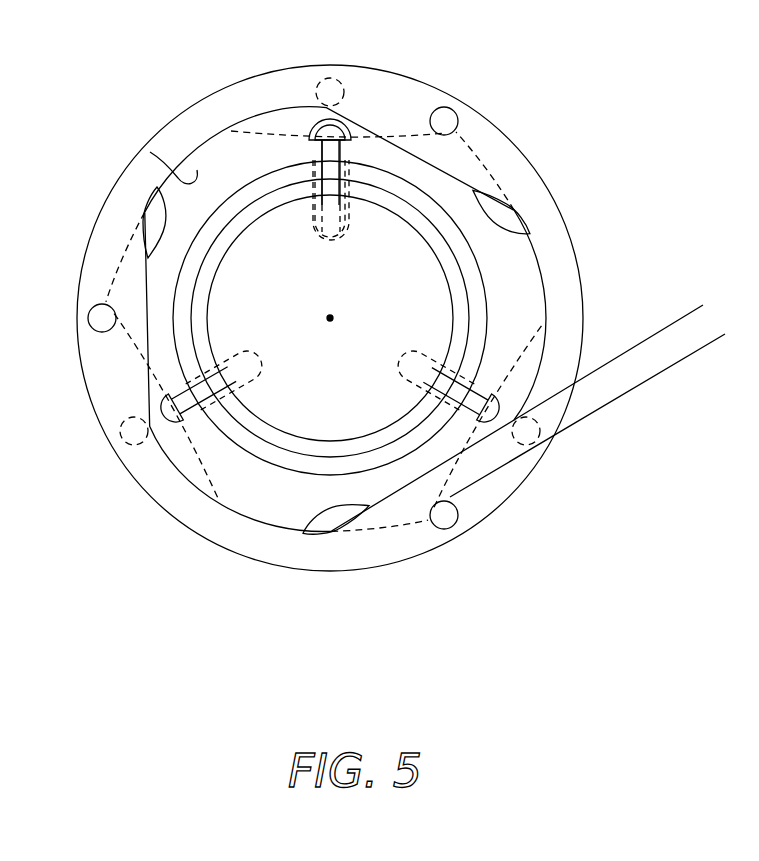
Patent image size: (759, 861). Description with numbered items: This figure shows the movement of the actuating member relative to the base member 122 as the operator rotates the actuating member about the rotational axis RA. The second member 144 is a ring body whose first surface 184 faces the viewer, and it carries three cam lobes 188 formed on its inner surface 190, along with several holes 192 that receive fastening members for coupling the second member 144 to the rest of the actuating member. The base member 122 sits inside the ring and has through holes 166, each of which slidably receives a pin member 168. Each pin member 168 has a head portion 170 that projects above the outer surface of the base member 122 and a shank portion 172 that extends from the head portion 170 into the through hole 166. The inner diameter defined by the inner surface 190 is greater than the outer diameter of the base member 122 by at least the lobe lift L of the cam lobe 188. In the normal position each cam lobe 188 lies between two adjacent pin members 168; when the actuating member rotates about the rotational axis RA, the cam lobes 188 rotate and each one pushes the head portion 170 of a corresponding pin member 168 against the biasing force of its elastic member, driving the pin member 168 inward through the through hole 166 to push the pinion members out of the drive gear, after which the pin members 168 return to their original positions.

The base member 122 is at (262, 460).
The second member 144 is at (537, 162).
The through hole 166 is at (311, 200).
The pin member 168 is at (346, 120).
The head portion 170 is at (322, 118).
The shank portion 172 is at (310, 162).
The first surface 184 is at (150, 156).
The cam lobe 188 is at (155, 188).
The inner surface 190 is at (197, 170).
The hole 192 is at (452, 112).
The rotational axis RA is at (333, 316).
The lobe lift L is at (717, 380).